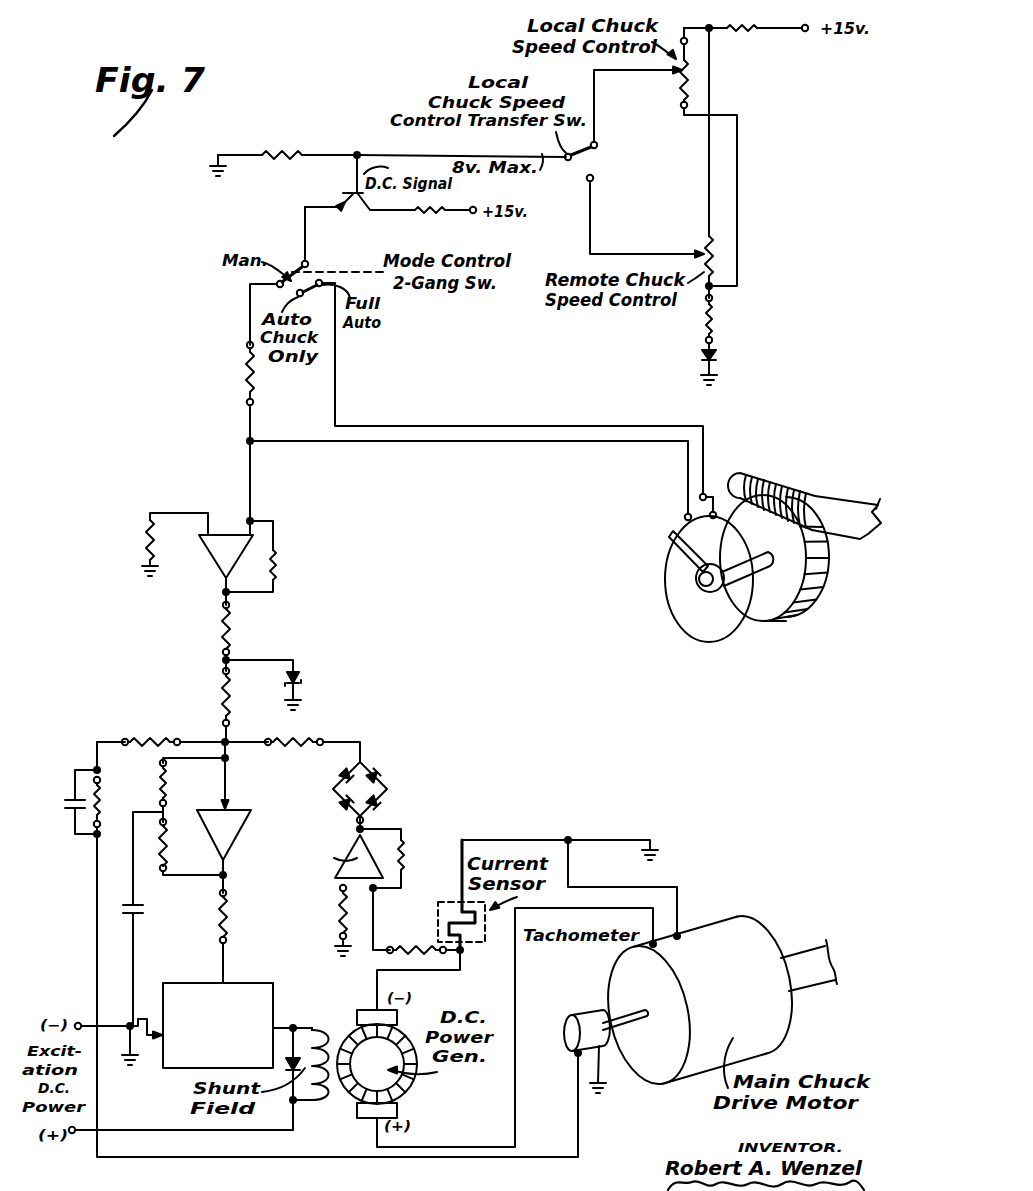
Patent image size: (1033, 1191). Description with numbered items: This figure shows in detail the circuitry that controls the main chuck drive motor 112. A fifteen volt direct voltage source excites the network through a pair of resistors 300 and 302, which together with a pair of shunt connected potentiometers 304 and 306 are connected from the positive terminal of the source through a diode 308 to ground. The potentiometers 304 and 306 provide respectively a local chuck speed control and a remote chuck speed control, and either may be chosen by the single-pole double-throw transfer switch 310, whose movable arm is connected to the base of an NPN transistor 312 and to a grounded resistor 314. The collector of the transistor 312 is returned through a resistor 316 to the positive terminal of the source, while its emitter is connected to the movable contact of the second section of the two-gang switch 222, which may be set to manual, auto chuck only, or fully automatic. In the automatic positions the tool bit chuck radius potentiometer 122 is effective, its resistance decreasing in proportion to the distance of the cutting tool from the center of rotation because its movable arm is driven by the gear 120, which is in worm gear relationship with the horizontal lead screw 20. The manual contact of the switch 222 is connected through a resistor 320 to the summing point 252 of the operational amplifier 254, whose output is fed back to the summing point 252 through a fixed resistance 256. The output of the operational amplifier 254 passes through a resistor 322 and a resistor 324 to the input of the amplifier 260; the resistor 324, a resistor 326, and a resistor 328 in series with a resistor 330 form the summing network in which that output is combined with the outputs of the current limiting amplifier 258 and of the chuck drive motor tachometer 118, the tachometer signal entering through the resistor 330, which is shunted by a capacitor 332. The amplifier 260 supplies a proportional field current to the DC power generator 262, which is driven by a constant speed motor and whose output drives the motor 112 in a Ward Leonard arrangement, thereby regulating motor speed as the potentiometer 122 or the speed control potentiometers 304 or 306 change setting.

The horizontal lead screw 20 is at (797, 487).
The chuck drive motor 112 is at (756, 946).
The chuck drive motor tachometer 118 is at (566, 1030).
The gear 120 is at (790, 600).
The tool bit chuck radius potentiometer 122 is at (693, 630).
The two-gang switch 222 is at (288, 256).
The summing point 252 is at (256, 436).
The operational amplifier 254 is at (224, 542).
The fixed resistance 256 is at (276, 566).
The current limiting amplifier 258 is at (338, 870).
The amplifier 260 is at (238, 828).
The DC power generator 262 is at (232, 983).
The resistor 300 is at (742, 36).
The resistor 302 is at (714, 319).
The local chuck speed control potentiometer 304 is at (683, 80).
The remote chuck speed control potentiometer 306 is at (712, 254).
The diode 308 is at (716, 357).
The single-pole double-throw switch 310 is at (596, 160).
The NPN transistor 312 is at (357, 208).
The grounded resistor 314 is at (285, 157).
The resistor 316 is at (435, 212).
The resistor 320 is at (255, 387).
The resistor 322 is at (233, 636).
The resistor 324 is at (221, 700).
The resistor 326 is at (308, 740).
The resistor 328 is at (162, 740).
The resistor 330 is at (140, 815).
The capacitor 332 is at (68, 795).